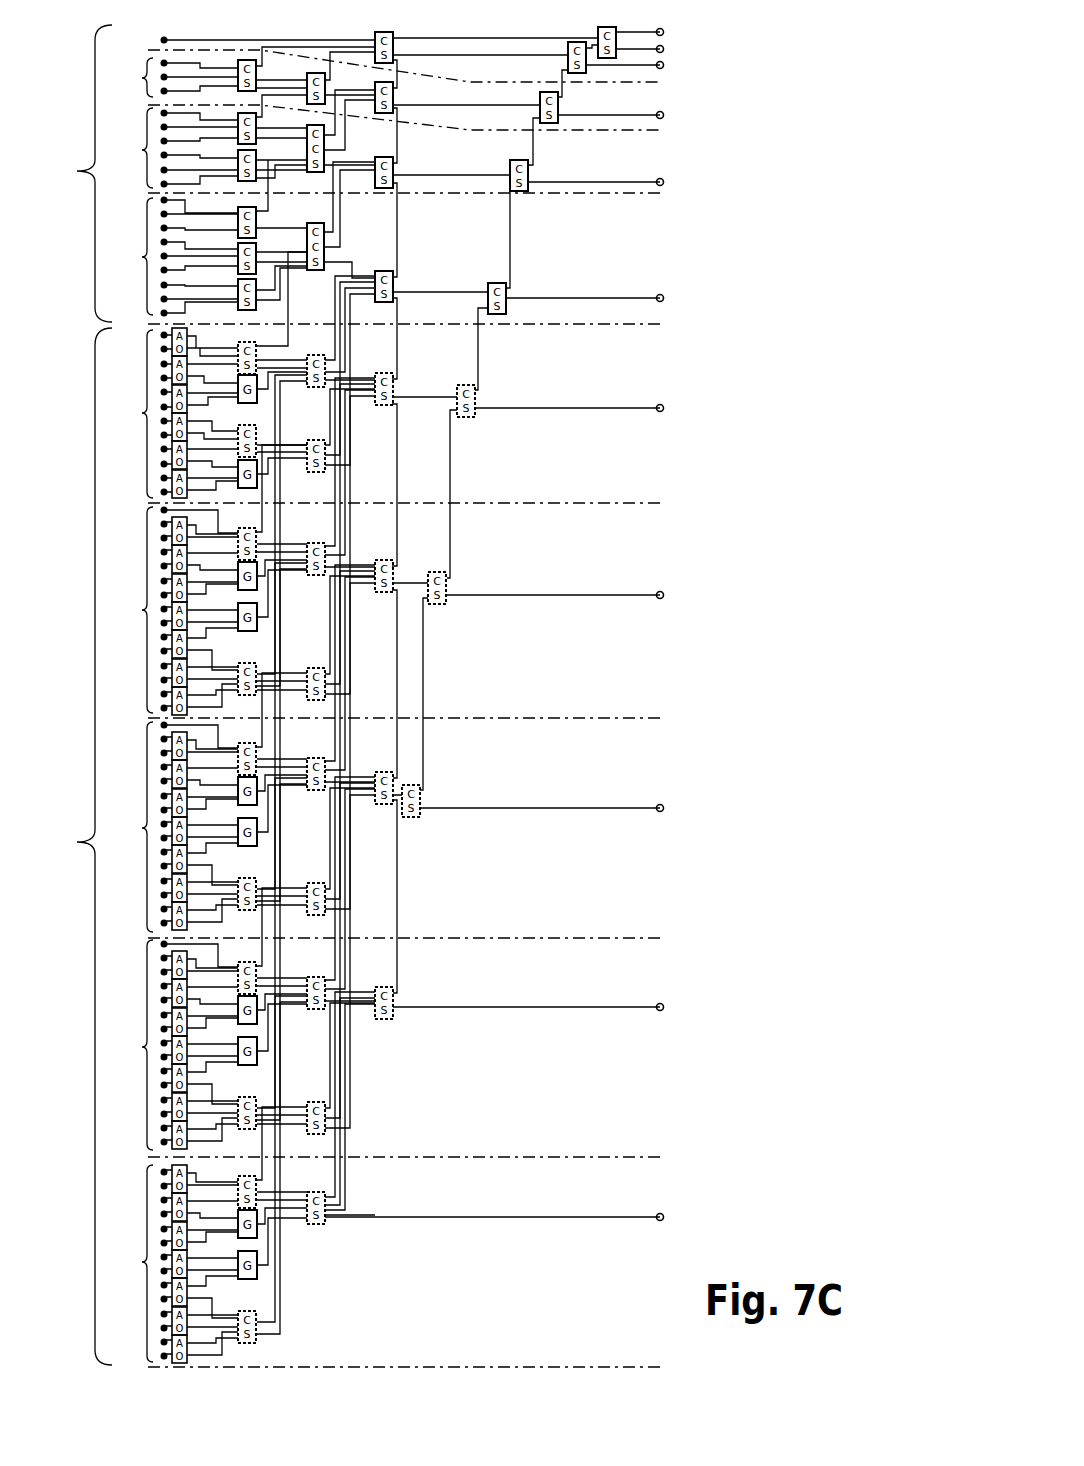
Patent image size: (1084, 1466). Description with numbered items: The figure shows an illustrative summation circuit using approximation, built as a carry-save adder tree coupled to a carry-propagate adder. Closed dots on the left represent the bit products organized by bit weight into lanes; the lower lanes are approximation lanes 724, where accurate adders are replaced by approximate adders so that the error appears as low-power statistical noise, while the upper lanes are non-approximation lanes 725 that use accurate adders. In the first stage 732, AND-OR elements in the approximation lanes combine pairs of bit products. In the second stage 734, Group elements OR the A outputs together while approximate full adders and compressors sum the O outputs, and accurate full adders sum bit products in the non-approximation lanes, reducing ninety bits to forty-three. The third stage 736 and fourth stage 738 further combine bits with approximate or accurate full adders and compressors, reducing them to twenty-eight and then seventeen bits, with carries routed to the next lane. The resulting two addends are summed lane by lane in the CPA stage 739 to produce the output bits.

The approximation lanes 724 is at (346, 845).
The non-approximation lanes 725 is at (346, 173).
The first stage 732 is at (200, 32).
The second stage 734 is at (262, 32).
The third stage 736 is at (330, 32).
The fourth stage 738 is at (397, 32).
The CPA stage 739 is at (618, 32).